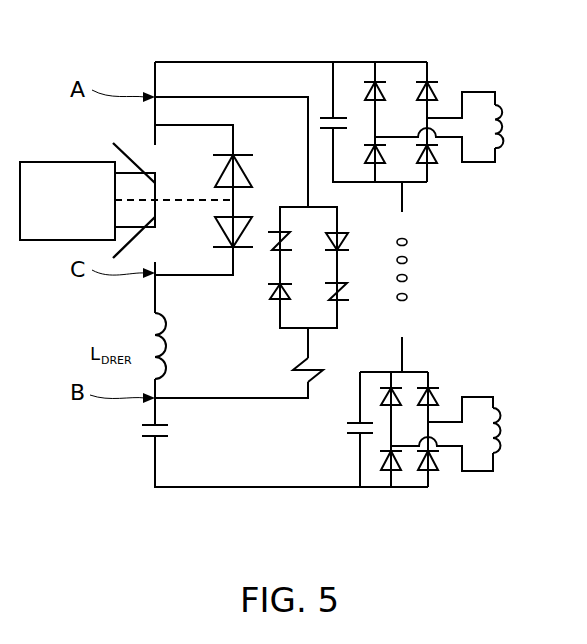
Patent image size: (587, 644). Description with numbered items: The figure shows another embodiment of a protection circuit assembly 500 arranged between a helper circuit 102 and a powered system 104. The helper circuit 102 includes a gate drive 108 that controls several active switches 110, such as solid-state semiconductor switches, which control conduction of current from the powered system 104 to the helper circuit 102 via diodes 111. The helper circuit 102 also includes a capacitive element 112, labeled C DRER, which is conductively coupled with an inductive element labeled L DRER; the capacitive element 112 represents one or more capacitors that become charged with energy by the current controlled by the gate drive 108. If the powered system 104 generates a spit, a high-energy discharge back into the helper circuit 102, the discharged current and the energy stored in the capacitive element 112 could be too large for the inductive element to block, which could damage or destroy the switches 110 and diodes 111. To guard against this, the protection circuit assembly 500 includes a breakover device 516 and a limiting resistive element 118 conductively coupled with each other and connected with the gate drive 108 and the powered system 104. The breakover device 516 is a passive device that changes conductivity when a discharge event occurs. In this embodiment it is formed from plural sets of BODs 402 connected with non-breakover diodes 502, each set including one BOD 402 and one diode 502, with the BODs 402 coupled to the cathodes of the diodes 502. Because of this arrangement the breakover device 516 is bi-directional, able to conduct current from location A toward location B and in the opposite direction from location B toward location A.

The helper circuit 102 is at (310, 50).
The powered system 104 is at (540, 508).
The gate drive 108 is at (42, 162).
The active switches 110 is at (147, 154).
The diodes 111 is at (209, 169).
The capacitive element 112 is at (163, 437).
The limiting resistive element 118 is at (297, 360).
The BODs 402 is at (272, 231).
The protection circuit assembly 500 is at (290, 508).
The diodes 502 is at (243, 303).
The breakover device 516 is at (357, 198).